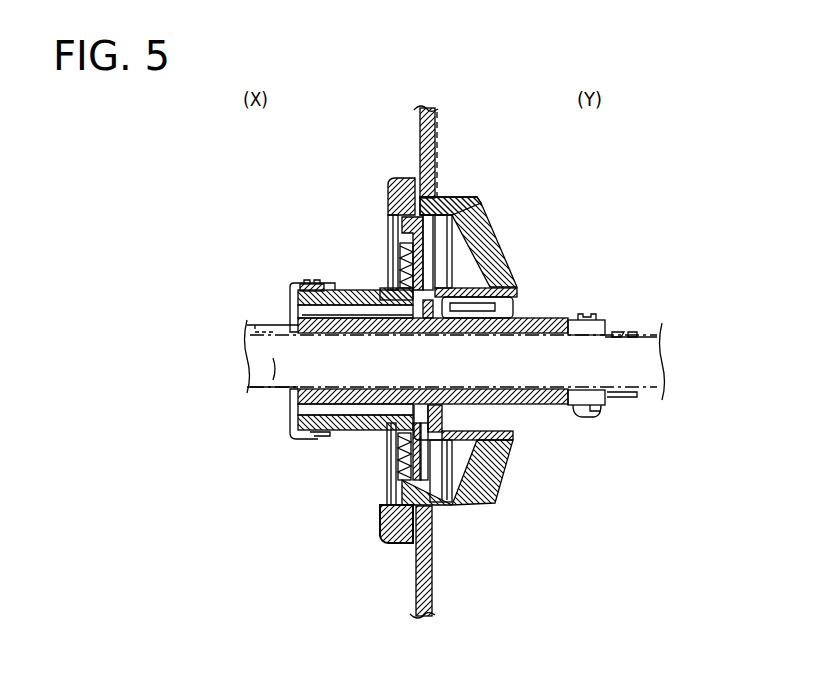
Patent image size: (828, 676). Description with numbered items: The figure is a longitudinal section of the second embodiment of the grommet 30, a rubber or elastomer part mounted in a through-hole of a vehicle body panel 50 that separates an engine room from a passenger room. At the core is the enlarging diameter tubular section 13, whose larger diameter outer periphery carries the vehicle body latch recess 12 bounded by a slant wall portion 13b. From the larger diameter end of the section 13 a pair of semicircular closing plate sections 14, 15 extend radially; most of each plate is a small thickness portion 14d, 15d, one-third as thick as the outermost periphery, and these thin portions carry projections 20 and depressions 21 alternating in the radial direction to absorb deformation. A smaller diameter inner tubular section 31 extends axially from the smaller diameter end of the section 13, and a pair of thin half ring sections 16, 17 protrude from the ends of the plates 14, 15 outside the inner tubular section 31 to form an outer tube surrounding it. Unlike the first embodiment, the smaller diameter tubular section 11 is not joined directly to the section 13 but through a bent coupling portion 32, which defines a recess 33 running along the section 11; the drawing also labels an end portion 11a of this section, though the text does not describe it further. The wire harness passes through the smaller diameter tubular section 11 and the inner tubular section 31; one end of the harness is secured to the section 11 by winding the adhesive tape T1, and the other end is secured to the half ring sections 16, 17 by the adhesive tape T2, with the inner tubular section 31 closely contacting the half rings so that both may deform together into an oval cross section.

The smaller diameter tubular section 11 is at (577, 405).
The shaft end portion 11a is at (604, 417).
The vehicle body latch recess 12 is at (424, 160).
The enlarging diameter tubular section 13 is at (478, 238).
The slant wall portion 13b is at (482, 203).
The semicircular closing plate section 14 is at (390, 235).
The small thickness portion 14d is at (412, 270).
The semicircular closing plate section 15 is at (392, 510).
The small thickness portion 15d is at (402, 450).
The half ring section 16 is at (294, 300).
The half ring section 17 is at (306, 439).
The projections 20 is at (405, 268).
The depressions 21 is at (447, 268).
The grommet 30 is at (464, 345).
The smaller diameter inner tubular section 31 is at (330, 313).
The bent coupling portion 32 is at (490, 290).
The recess 33 is at (500, 310).
The vehicle body panel 50 is at (460, 124).
The adhesive tape T1 is at (586, 315).
The adhesive tape T2 is at (303, 284).